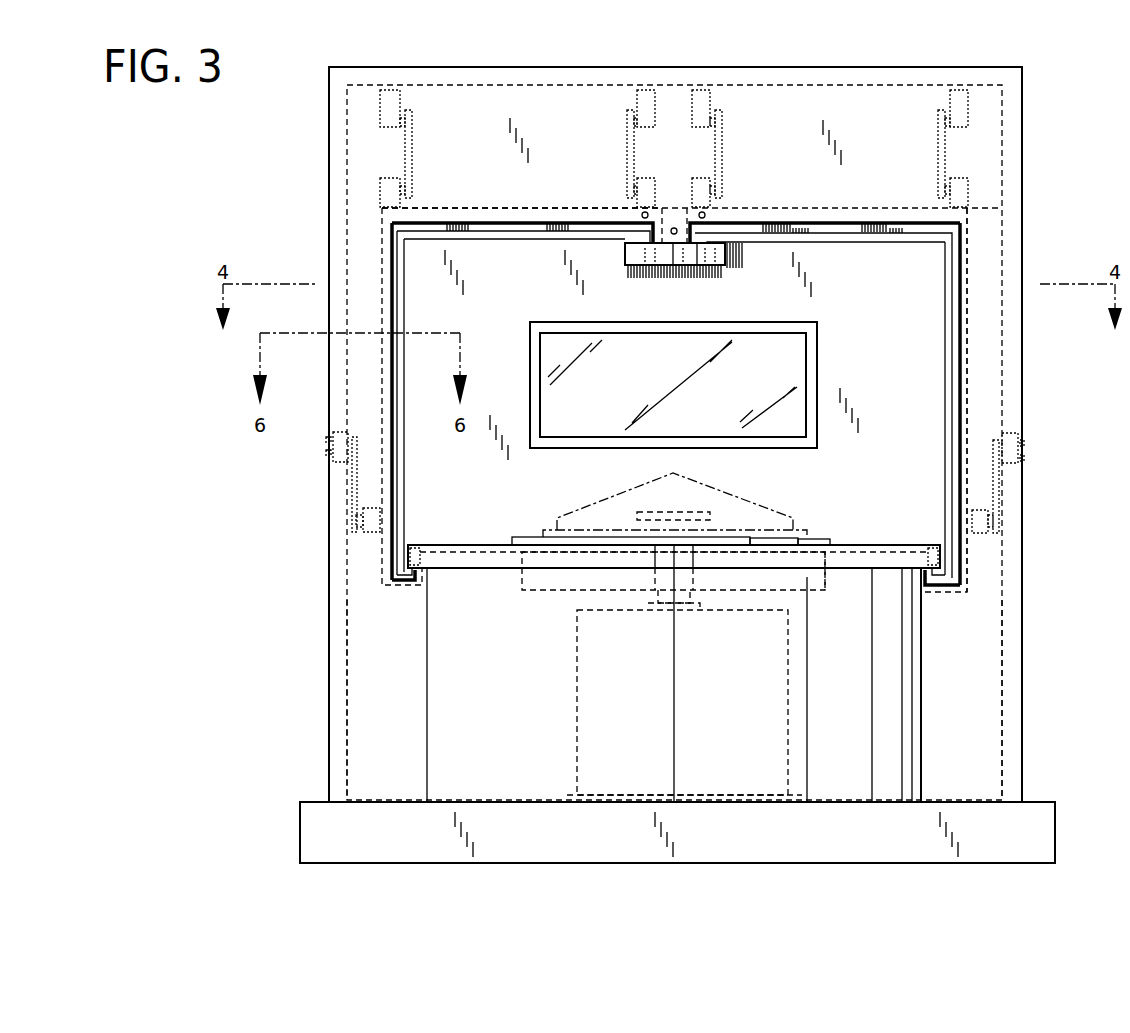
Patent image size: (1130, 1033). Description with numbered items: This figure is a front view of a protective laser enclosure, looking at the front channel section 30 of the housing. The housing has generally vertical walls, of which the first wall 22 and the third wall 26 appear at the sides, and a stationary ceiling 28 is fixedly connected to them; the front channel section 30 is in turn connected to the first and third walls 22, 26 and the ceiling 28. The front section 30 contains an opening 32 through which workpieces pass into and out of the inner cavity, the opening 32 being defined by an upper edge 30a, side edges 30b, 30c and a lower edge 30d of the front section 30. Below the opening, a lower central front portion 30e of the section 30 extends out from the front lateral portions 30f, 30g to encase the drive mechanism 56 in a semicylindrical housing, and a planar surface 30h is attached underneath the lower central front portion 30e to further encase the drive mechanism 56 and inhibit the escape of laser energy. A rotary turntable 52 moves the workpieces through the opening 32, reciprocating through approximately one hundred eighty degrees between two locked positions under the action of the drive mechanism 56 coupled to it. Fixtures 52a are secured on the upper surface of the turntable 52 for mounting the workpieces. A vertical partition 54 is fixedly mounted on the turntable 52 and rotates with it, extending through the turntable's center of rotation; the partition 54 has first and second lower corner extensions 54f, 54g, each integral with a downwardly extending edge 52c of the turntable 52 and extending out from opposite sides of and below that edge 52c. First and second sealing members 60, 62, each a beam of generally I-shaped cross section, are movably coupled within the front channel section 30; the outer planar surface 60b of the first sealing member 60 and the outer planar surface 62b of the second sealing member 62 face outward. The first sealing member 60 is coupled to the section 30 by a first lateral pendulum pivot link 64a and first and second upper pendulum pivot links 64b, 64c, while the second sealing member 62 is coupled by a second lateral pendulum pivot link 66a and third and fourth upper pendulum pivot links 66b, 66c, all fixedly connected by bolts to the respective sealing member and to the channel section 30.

The first vertical wall 22 is at (328, 158).
The third vertical wall 26 is at (1022, 137).
The stationary ceiling 28 is at (855, 70).
The front channel section 30 is at (805, 105).
The upper edge 30a is at (855, 222).
The side edge 30b is at (392, 270).
The side edge 30c is at (958, 298).
The lower edge 30d is at (860, 553).
The lower central front portion 30e is at (855, 742).
The front lateral portion 30f is at (375, 698).
The front lateral portion 30g is at (985, 678).
The planar surface 30h is at (822, 803).
The opening 32 is at (585, 222).
The rotary turntable 52 is at (440, 570).
The fixtures 52a is at (603, 517).
The downwardly extending edge 52c is at (890, 553).
The vertical partition 54 is at (425, 490).
The first lower corner extension 54f is at (393, 580).
The second lower corner extension 54g is at (952, 572).
The drive mechanism 56 is at (630, 597).
The first sealing member 60 is at (486, 208).
The outer planar surface 60b is at (437, 222).
The second sealing member 62 is at (965, 250).
The outer planar surface 62b is at (915, 225).
The first lateral pendulum pivot link 64a is at (333, 446).
The first upper pendulum pivot link 64b is at (400, 153).
The second upper pendulum pivot link 64c is at (627, 148).
The second lateral pendulum pivot link 66a is at (1000, 490).
The third upper pendulum pivot link 66b is at (940, 150).
The fourth upper pendulum pivot link 66c is at (720, 158).